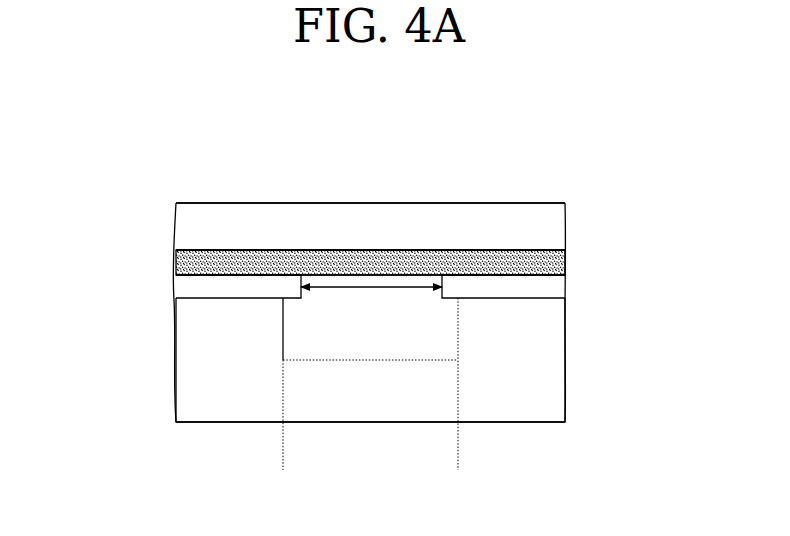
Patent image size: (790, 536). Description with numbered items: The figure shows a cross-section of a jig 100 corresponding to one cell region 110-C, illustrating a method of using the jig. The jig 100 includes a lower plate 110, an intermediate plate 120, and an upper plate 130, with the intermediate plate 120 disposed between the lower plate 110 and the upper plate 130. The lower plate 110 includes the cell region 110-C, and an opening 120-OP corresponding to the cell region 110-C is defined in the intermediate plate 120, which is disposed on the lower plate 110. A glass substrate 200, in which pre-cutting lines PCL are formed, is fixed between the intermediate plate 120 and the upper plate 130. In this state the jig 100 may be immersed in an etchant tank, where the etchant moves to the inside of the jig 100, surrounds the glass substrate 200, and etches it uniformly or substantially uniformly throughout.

The jig 100 is at (449, 312).
The lower plate 110 is at (416, 360).
The intermediate plate 120 is at (555, 287).
The upper plate 130 is at (558, 228).
The glass substrate 200 is at (178, 259).
The pre-cutting lines PCL is at (300, 252).
The opening 120-OP is at (342, 290).
The cell region 110-C is at (458, 466).